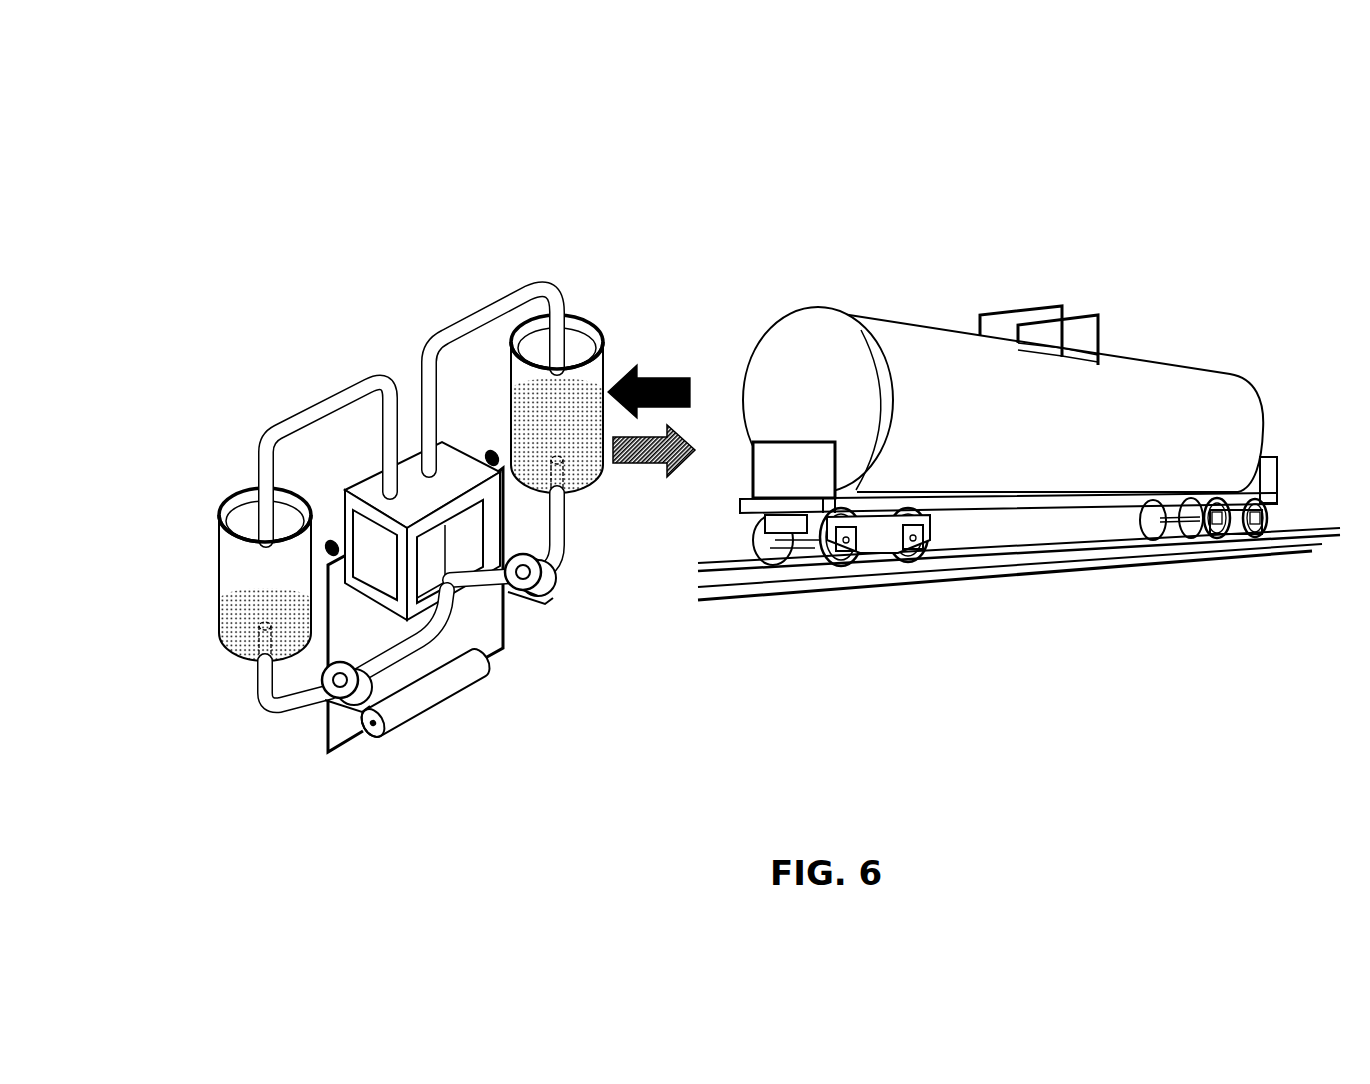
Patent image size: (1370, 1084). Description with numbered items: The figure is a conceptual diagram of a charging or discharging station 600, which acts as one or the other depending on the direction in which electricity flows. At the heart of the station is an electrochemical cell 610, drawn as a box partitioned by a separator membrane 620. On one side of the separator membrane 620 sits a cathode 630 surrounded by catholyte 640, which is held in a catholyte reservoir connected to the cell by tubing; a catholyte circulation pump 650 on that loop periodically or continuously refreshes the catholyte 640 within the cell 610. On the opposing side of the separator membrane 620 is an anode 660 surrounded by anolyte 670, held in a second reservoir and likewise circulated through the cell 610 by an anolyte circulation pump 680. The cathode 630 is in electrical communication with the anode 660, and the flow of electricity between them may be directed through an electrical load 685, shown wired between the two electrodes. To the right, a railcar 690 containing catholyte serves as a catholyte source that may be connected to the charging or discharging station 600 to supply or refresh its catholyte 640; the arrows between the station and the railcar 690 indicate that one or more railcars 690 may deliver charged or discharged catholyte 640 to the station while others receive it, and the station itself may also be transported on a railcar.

The charging or discharging station 600 is at (996, 176).
The electrochemical cell 610 is at (468, 470).
The separator membrane 620 is at (453, 577).
The cathode 630 is at (483, 513).
The catholyte 640 is at (583, 312).
The catholyte circulation pump 650 is at (547, 600).
The anode 660 is at (352, 523).
The anolyte 670 is at (257, 483).
The anolyte circulation pump 680 is at (326, 731).
The electrical load 685 is at (430, 708).
The railcar 690 is at (1117, 353).